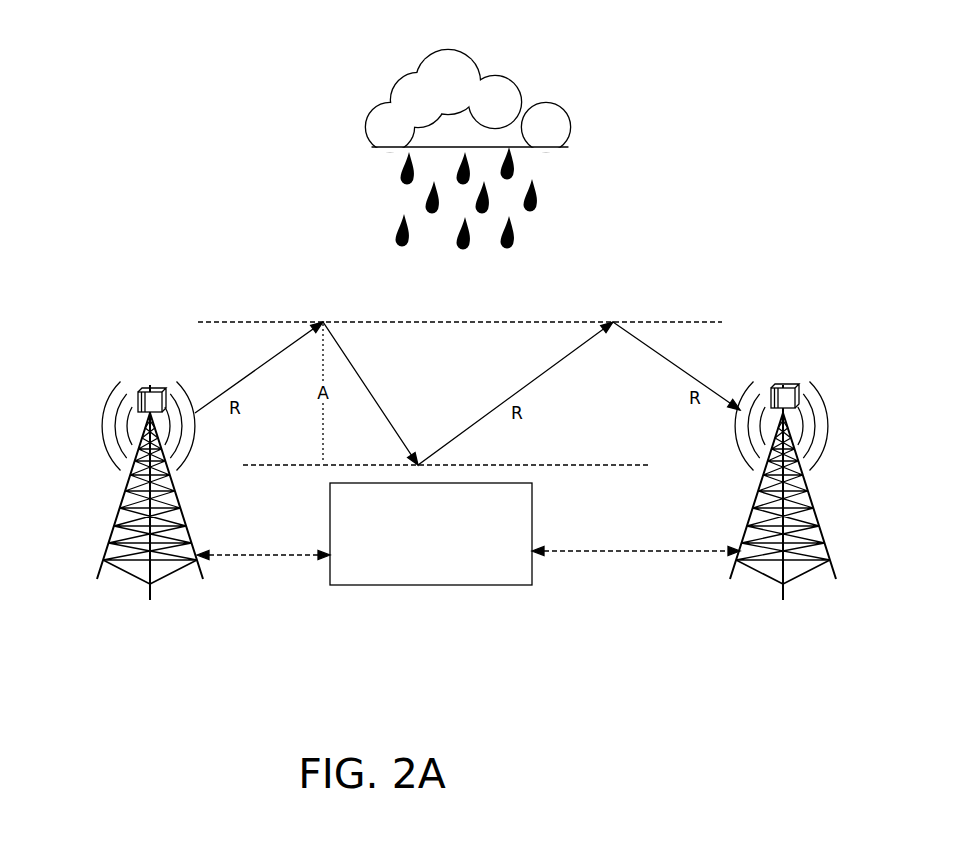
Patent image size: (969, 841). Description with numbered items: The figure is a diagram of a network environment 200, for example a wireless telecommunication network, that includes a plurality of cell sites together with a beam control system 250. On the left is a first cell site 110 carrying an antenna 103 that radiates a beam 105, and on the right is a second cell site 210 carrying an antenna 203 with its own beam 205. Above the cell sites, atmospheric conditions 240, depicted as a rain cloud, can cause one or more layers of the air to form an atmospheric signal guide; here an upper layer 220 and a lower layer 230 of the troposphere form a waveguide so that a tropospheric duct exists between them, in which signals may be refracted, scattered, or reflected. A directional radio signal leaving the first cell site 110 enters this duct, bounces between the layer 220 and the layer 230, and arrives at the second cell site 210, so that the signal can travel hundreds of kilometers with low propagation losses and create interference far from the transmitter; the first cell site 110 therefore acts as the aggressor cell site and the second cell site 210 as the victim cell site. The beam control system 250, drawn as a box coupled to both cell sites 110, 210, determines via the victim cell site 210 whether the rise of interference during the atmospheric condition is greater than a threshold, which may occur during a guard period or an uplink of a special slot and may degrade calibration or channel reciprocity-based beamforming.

The network environment 200 is at (835, 78).
The atmospheric conditions 240 is at (470, 150).
The layer 220 is at (441, 315).
The layer 230 is at (427, 476).
The beam control system 250 is at (431, 534).
The cell site 110 is at (122, 520).
The antenna 103 is at (138, 392).
The beam 105 is at (187, 397).
The cell site 210 is at (762, 507).
The antenna 203 is at (772, 392).
The beam 205 is at (815, 392).